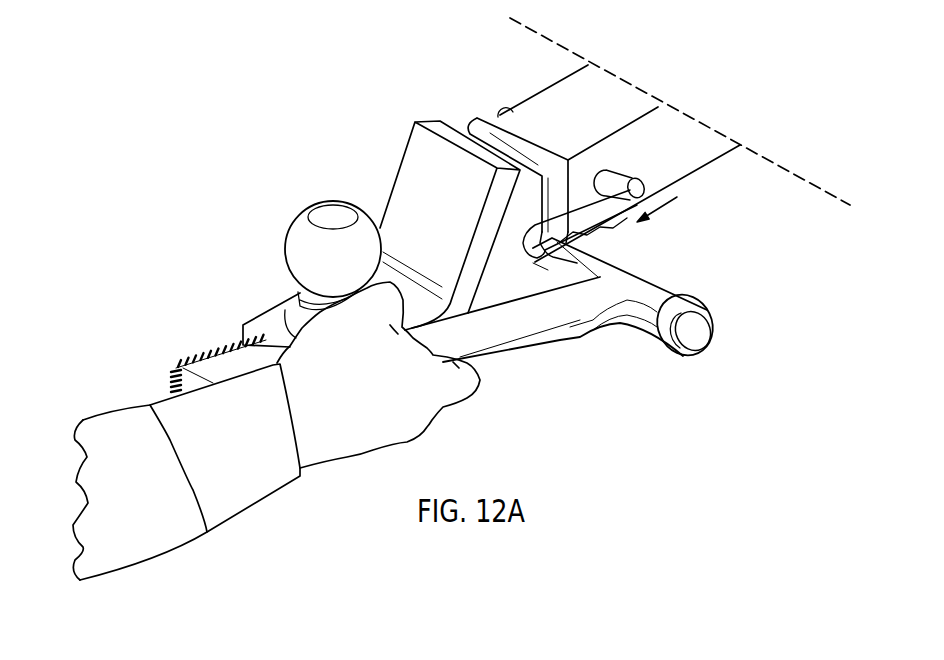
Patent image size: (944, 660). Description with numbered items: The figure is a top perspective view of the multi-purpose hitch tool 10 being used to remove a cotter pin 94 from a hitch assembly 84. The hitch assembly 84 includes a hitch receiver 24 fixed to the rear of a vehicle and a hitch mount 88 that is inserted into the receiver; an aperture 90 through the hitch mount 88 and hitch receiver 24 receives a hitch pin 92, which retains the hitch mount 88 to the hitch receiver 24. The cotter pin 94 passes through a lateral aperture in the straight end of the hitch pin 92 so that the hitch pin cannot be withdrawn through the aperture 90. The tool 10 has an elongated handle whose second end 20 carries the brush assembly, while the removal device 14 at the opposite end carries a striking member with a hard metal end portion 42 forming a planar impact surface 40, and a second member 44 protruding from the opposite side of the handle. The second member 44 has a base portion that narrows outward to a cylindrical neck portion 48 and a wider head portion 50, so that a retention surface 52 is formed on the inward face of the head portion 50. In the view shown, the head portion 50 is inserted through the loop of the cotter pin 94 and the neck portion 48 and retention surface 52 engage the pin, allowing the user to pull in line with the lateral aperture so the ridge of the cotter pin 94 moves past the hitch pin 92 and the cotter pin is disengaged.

The multi-purpose hitch tool 10 is at (580, 348).
The removal device 14 is at (686, 266).
The second end 20 is at (160, 356).
The hitch receiver 24 is at (563, 93).
The planar impact surface 40 is at (693, 331).
The end portion 42 is at (668, 344).
The second member 44 is at (530, 280).
The neck portion 48 is at (577, 225).
The head portion 50 is at (536, 248).
The retention surface 52 is at (540, 266).
The hitch assembly 84 is at (250, 262).
The hitch mount 88 is at (425, 158).
The aperture 90 is at (604, 168).
The hitch pin 92 is at (673, 163).
The cotter pin 94 is at (590, 185).